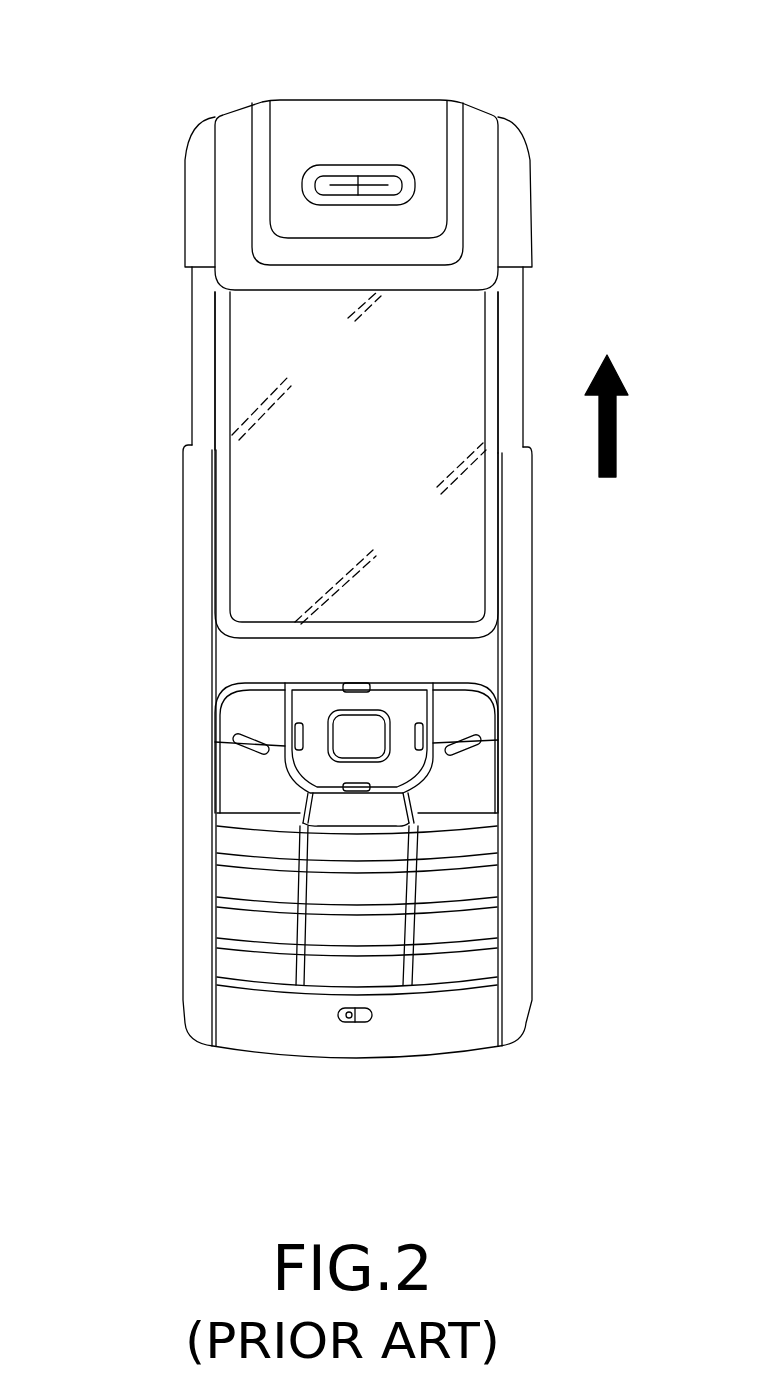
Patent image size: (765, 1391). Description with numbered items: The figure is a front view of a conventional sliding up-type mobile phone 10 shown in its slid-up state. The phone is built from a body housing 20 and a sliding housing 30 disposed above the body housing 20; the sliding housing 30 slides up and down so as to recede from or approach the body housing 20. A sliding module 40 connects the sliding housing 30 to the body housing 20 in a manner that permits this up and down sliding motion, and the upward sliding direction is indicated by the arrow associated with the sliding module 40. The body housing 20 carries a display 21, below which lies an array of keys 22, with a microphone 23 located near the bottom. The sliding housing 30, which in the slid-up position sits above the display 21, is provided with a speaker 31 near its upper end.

The sliding up-type mobile phone 10 is at (125, 173).
The body housing 20 is at (558, 767).
The display 21 is at (470, 558).
The array of keys 22 is at (483, 882).
The microphone 23 is at (353, 1022).
The sliding housing 30 is at (536, 114).
The speaker 31 is at (357, 170).
The sliding module 40 is at (537, 313).